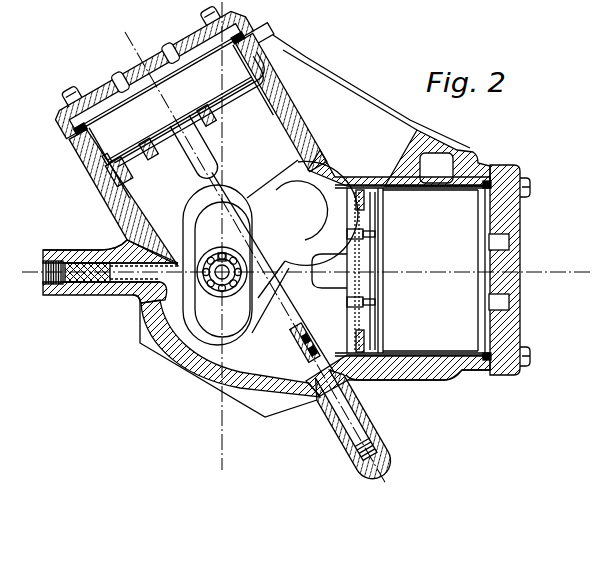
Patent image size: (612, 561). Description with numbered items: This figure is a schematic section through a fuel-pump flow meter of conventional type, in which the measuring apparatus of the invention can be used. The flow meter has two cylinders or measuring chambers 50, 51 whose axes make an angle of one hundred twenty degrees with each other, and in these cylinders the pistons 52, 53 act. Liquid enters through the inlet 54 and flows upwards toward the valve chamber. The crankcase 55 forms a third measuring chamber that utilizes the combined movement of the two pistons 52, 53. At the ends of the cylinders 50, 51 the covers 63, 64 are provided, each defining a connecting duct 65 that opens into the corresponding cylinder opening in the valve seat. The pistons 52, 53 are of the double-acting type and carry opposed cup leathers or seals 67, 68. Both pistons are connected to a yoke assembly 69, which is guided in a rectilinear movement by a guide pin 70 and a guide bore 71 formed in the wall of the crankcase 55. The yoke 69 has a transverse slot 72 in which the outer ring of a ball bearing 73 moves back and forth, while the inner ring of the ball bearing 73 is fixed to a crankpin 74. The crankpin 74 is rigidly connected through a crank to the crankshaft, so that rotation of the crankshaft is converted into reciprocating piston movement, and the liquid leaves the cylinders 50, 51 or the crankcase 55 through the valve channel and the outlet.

The cylinder 50 is at (437, 363).
The cylinder 51 is at (93, 176).
The piston 52 is at (393, 303).
The piston 53 is at (166, 129).
The inlet 54 is at (367, 103).
The crankcase 55 is at (255, 368).
The cover 63 is at (521, 245).
The cover 64 is at (117, 83).
The connecting duct 65 is at (158, 67).
The cup leather 67 is at (113, 163).
The cup leather 68 is at (120, 183).
The yoke assembly 69 is at (272, 177).
The guide pin 70 is at (125, 296).
The guide bore 71 is at (104, 295).
The transverse slot 72 is at (206, 373).
The ball bearing 73 is at (213, 253).
The crankpin 74 is at (228, 268).